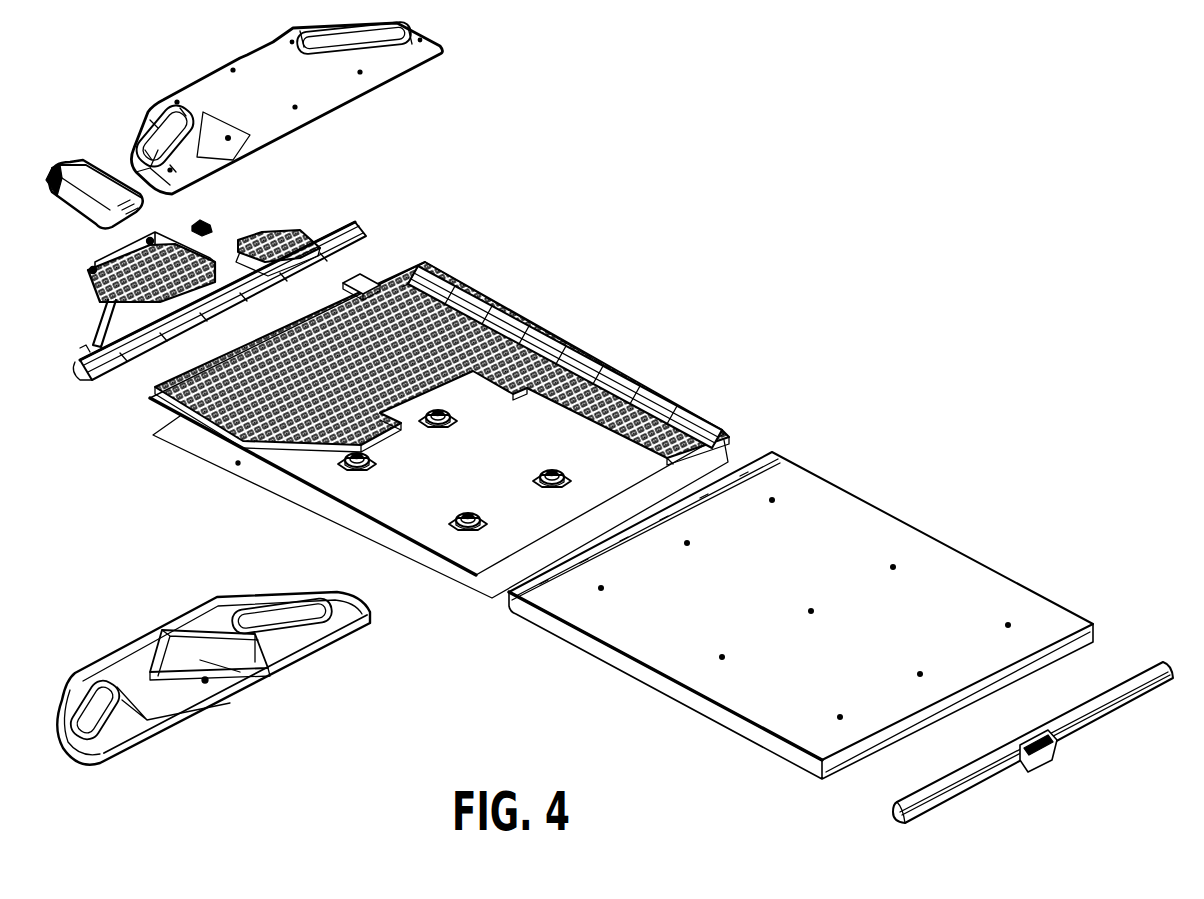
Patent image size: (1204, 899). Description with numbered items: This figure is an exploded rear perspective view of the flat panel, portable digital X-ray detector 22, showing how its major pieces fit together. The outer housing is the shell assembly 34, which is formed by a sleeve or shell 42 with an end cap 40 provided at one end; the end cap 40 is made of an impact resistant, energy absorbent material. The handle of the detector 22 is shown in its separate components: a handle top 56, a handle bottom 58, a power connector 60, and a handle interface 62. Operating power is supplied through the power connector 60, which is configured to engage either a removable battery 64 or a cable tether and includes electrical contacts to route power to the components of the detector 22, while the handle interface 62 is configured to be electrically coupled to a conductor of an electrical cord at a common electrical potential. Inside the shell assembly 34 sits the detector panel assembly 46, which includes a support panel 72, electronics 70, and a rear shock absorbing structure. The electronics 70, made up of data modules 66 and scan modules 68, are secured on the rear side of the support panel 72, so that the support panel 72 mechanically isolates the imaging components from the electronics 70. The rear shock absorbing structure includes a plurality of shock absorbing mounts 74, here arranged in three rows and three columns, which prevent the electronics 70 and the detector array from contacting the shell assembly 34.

The portable digital X-ray detector 22 is at (810, 280).
The shell assembly 34 is at (793, 806).
The end cap 40 is at (965, 785).
The sleeve or shell 42 is at (672, 690).
The detector panel assembly 46 is at (169, 498).
The handle top 56 is at (80, 750).
The handle bottom 58 is at (205, 85).
The power connector 60 is at (240, 252).
The handle interface 62 is at (356, 222).
The removable battery 64 is at (73, 203).
The data modules 66 is at (690, 414).
The scan modules 68 is at (353, 277).
The electronics 70 is at (232, 422).
The support panel 72 is at (357, 492).
The shock absorbing mounts 74 is at (434, 416).